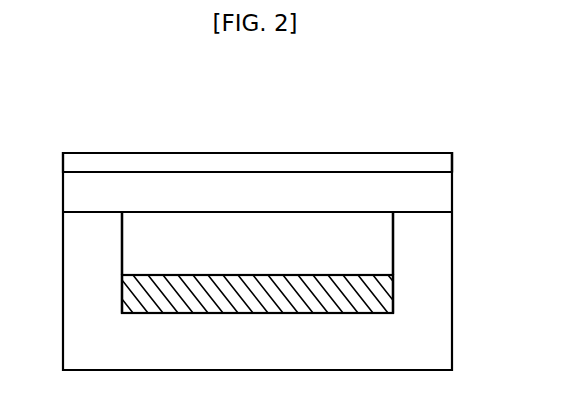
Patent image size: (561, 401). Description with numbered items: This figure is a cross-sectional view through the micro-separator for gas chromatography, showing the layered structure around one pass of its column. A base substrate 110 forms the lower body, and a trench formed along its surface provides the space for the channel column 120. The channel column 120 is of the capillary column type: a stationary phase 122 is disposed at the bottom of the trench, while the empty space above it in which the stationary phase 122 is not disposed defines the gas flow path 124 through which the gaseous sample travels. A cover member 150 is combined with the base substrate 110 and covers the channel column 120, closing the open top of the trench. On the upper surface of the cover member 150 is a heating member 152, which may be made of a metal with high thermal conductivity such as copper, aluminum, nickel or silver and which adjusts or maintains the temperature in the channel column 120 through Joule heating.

The base substrate 110 is at (94, 219).
The channel column 120 is at (247, 99).
The stationary phase 122 is at (265, 278).
The gas flow path 124 is at (323, 220).
The cover member 150 is at (164, 178).
The heating member 152 is at (413, 162).